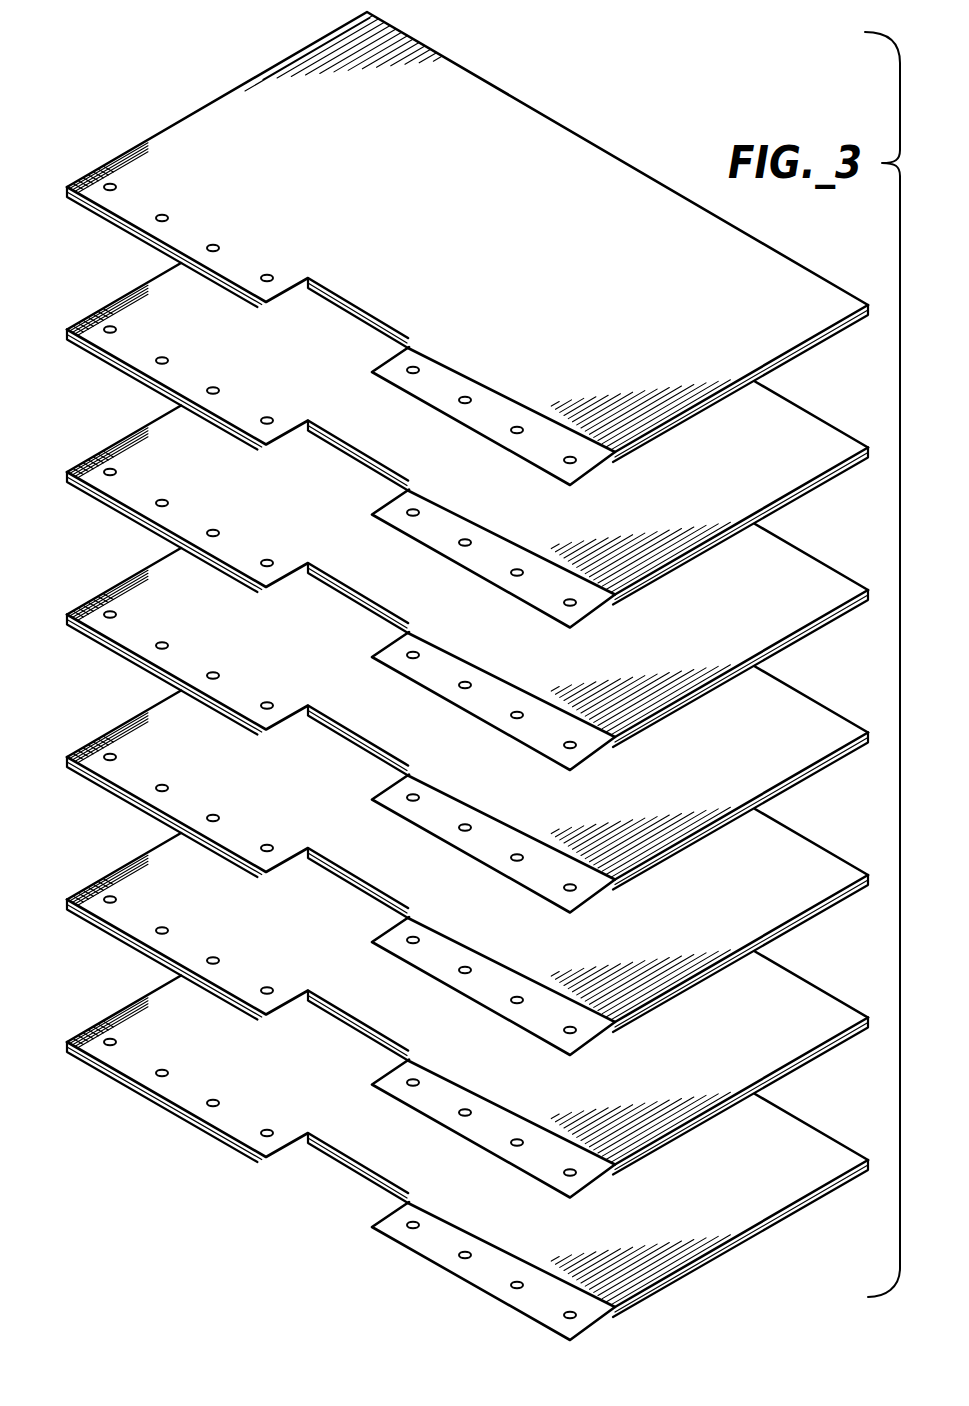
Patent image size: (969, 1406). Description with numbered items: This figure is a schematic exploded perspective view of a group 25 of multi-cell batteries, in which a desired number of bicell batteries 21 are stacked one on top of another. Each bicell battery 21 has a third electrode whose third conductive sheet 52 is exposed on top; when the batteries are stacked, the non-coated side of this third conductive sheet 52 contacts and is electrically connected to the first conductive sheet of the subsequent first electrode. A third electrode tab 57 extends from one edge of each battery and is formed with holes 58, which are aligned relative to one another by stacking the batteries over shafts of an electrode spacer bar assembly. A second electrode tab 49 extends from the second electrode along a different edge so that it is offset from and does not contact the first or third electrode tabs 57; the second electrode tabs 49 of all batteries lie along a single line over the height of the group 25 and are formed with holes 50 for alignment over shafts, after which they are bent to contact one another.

The group of bicell batteries 25 is at (450, 674).
The multi-cell battery 21 is at (450, 664).
The third conductive sheet 52 is at (109, 577).
The third electrode tab 57 is at (72, 584).
The holes 58 is at (198, 660).
The second electrode tab 49 is at (493, 829).
The holes 50 is at (491, 837).